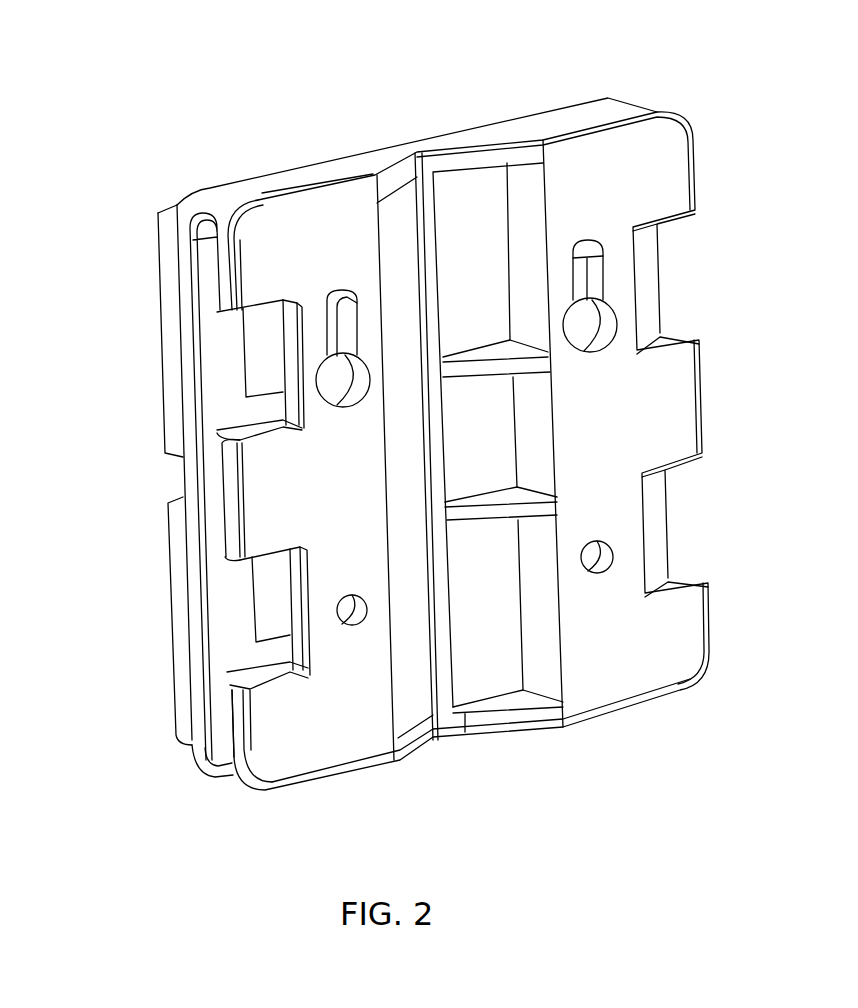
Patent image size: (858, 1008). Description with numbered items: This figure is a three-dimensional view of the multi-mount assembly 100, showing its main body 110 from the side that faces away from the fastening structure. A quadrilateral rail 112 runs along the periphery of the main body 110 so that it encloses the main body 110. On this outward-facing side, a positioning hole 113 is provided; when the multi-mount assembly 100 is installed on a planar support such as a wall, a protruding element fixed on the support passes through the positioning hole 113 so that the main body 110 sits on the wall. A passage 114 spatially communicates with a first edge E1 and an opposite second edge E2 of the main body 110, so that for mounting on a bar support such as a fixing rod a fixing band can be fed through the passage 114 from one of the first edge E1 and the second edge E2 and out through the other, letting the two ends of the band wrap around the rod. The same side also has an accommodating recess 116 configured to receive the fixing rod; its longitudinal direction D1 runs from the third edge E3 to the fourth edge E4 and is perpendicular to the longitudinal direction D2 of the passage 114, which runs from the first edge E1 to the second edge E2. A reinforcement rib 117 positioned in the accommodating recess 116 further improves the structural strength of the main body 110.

The multi-mount assembly 100 is at (210, 171).
The main body 110 is at (670, 168).
The quadrilateral rail 112 is at (166, 645).
The positioning hole 113 is at (322, 345).
The passage 114 is at (233, 366).
The accommodating recess 116 is at (460, 165).
The reinforcement rib 117 is at (525, 362).
The first edge E1 is at (183, 299).
The second edge E2 is at (693, 264).
The third edge E3 is at (425, 103).
The fourth edge E4 is at (605, 762).
The longitudinal direction of the accommodating recess D1 is at (479, 430).
The longitudinal direction of the passage D2 is at (472, 269).